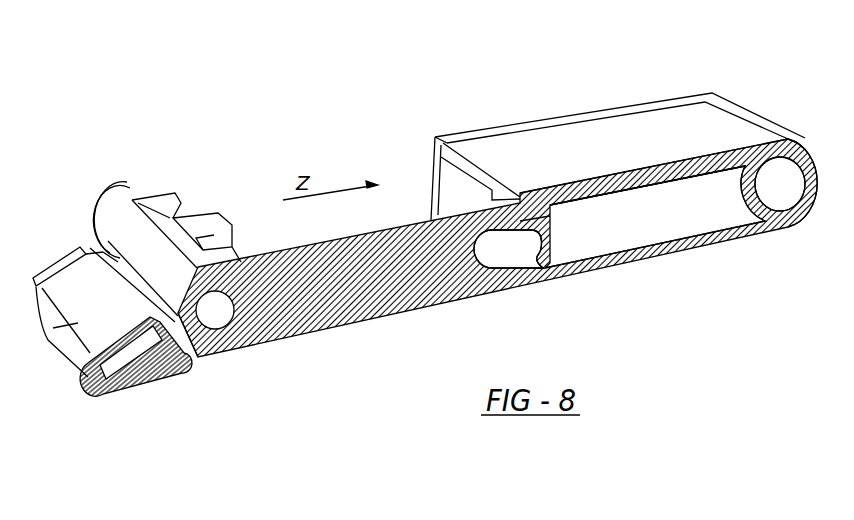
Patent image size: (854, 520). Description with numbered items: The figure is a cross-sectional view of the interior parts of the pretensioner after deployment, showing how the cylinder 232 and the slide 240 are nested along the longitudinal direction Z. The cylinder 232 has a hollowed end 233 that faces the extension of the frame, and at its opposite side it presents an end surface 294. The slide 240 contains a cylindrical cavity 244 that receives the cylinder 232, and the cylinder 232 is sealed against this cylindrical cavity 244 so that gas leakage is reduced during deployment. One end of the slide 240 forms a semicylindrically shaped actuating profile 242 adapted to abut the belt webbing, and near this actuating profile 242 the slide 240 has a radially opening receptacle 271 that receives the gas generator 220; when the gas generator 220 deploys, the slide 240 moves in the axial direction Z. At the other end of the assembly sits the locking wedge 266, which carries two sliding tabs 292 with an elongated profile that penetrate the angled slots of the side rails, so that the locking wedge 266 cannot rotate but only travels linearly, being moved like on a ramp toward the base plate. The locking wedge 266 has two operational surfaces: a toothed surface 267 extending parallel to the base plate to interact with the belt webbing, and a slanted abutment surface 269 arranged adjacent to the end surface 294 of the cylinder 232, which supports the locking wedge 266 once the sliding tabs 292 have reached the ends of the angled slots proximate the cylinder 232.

The gas generator 220 is at (782, 186).
The cylinder 232 is at (372, 276).
The hollowed end 233 is at (503, 252).
The slide 240 is at (546, 146).
The actuating profile 242 is at (808, 140).
The cylindrical cavity 244 is at (617, 215).
The locking wedge 266 is at (49, 345).
The toothed surface 267 is at (152, 383).
The abutment surface 269 is at (122, 267).
The radially opening receptacle 271 is at (750, 175).
The sliding tabs 292 is at (62, 262).
The end surface 294 is at (187, 362).